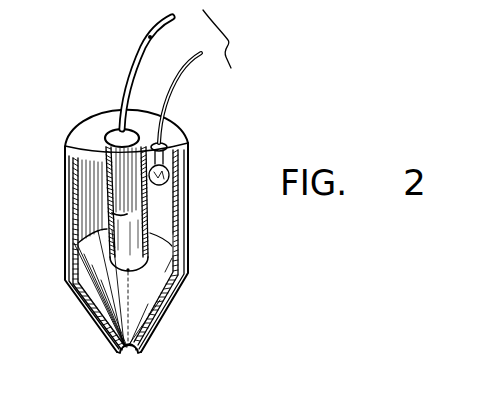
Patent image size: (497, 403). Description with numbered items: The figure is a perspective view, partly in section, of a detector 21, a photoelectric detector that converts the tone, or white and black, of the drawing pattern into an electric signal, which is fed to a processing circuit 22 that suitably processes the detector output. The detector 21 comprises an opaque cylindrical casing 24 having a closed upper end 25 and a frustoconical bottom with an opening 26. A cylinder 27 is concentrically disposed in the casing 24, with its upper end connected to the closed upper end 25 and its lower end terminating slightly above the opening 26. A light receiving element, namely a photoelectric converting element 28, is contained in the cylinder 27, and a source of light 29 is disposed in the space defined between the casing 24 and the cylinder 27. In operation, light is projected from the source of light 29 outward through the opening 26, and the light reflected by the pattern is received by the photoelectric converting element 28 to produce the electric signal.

The detector 21 is at (65, 100).
The processing circuit 22 is at (327, 44).
The opaque cylindrical casing 24 is at (181, 244).
The closed upper end 25 is at (188, 146).
The opening 26 is at (128, 353).
The cylinder 27 is at (147, 268).
The photoelectric converting element 28 is at (66, 148).
The source of light 29 is at (168, 181).